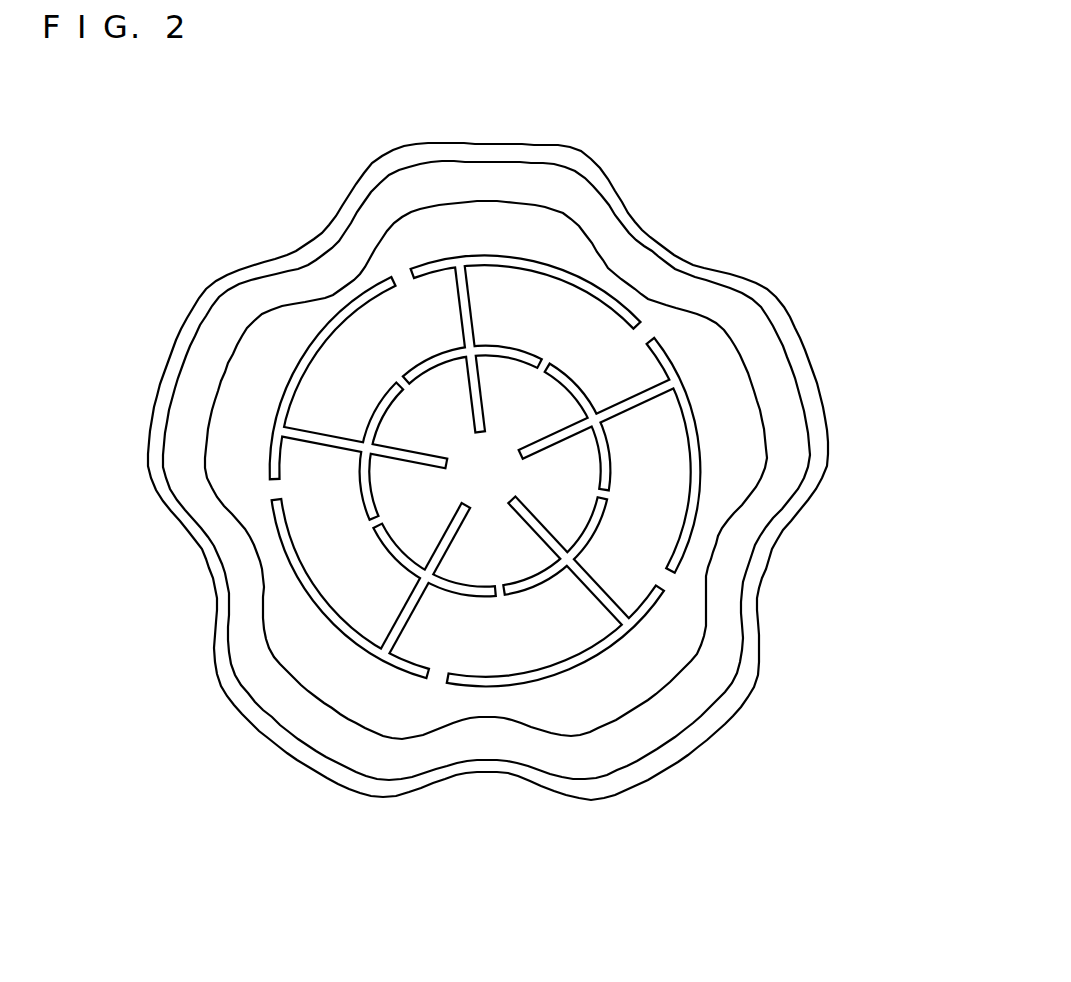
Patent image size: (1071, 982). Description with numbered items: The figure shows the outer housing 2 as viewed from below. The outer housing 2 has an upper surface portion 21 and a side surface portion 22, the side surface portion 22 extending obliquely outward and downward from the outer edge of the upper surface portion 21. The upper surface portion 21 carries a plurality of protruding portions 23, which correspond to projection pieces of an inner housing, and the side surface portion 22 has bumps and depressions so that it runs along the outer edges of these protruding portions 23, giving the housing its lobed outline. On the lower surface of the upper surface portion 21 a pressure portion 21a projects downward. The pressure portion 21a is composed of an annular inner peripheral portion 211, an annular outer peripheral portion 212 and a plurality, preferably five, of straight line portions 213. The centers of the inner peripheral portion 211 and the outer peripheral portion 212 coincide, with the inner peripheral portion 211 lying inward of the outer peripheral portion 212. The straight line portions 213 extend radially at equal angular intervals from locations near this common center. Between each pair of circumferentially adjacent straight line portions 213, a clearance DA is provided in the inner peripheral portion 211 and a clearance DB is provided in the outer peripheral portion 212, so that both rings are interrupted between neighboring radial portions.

The outer housing 2 is at (523, 448).
The upper surface portion 21 is at (572, 253).
The pressure portion 21a is at (601, 477).
The inner peripheral portion 211 is at (610, 477).
The outer peripheral portion 212 is at (700, 468).
The straight line portion 213 is at (653, 398).
The side surface portion 22 is at (760, 290).
The protruding portion 23 is at (483, 220).
The clearance DA is at (607, 495).
The clearance DB is at (440, 678).